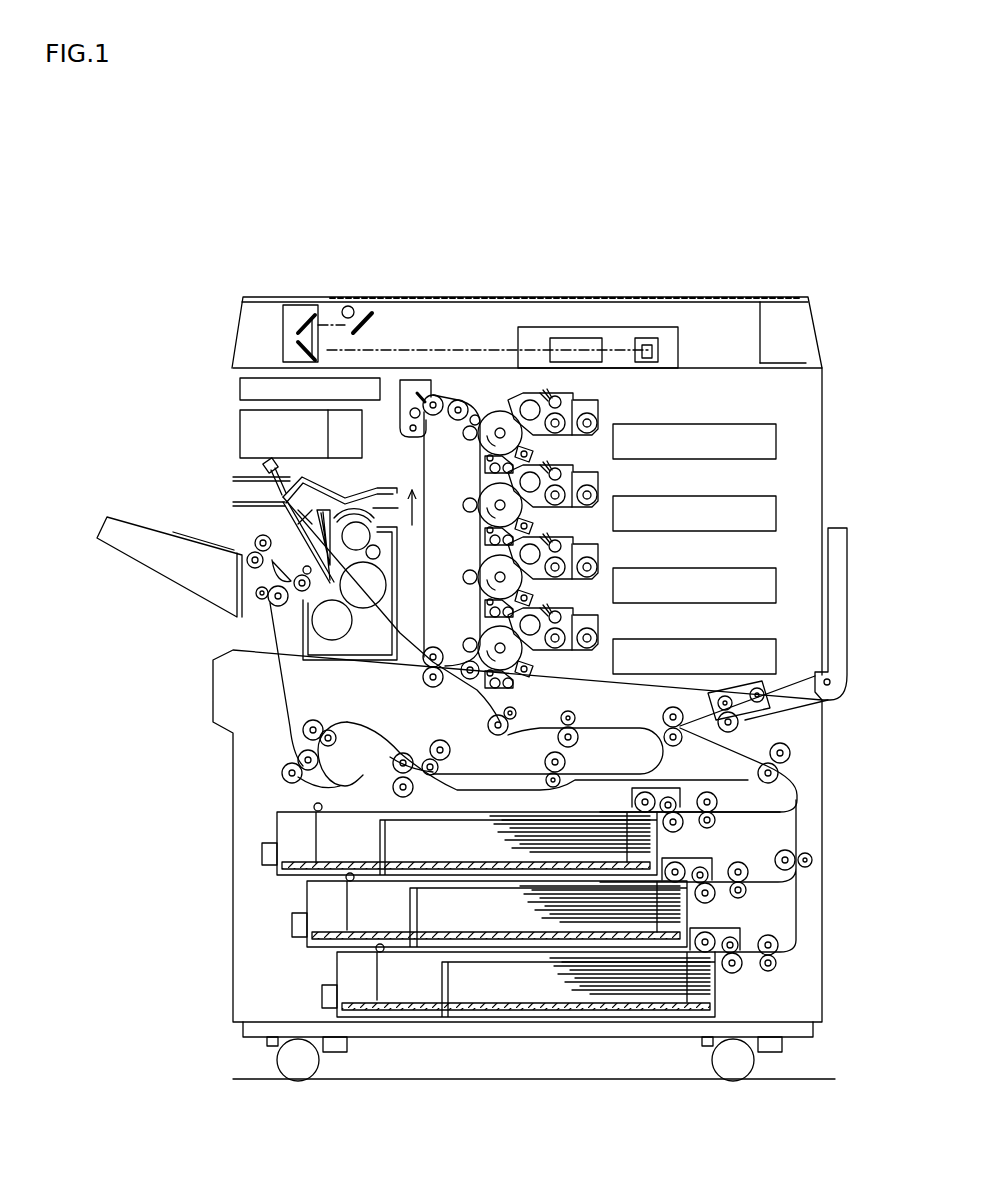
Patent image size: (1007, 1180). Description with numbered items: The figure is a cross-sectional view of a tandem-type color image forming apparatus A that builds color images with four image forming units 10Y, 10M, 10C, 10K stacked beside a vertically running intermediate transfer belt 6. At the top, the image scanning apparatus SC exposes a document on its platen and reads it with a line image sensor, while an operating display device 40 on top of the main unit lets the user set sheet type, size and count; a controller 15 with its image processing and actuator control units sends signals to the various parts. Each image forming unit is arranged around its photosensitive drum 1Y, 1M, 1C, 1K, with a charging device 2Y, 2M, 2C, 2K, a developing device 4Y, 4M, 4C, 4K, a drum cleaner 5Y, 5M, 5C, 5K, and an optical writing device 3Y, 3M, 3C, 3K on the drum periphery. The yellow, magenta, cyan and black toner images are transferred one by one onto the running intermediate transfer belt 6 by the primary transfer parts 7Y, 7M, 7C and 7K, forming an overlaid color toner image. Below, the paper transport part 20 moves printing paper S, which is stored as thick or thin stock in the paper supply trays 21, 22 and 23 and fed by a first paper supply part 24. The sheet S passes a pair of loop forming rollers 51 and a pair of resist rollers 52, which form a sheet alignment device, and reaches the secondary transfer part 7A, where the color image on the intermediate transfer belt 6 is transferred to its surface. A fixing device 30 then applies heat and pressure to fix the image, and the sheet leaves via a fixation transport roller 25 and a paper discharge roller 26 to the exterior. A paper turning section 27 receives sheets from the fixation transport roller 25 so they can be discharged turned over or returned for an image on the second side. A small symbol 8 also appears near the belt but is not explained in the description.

The image forming apparatus A is at (828, 470).
The image scanning apparatus SC is at (745, 328).
The operating display device 40 is at (792, 362).
The controller 15 is at (245, 432).
The sensor 8 is at (385, 509).
The paper discharge roller 26 is at (256, 538).
The fixation transport roller 25 is at (303, 573).
The paper turning section 27 is at (268, 665).
The fixing device 30 is at (353, 668).
The intermediate transfer belt 6 is at (424, 455).
The secondary transfer part 7A is at (433, 688).
The primary transfer part 7K is at (468, 682).
The image forming unit 10Y is at (571, 421).
The image forming unit 10M is at (574, 502).
The image forming unit 10C is at (572, 574).
The image forming unit 10K is at (573, 657).
The photosensitive drum 1Y is at (496, 414).
The photosensitive drum 1M is at (476, 498).
The photosensitive drum 1C is at (476, 570).
The photosensitive drum 1K is at (476, 641).
The primary transfer part 7Y is at (452, 433).
The primary transfer part 7M is at (452, 505).
The primary transfer part 7C is at (452, 577).
The developing device 4Y is at (575, 402).
The developing device 4M is at (586, 483).
The developing device 4C is at (584, 555).
The developing device 4K is at (584, 626).
The charging device 2Y is at (562, 456).
The charging device 2M is at (565, 527).
The charging device 2C is at (563, 599).
The charging device 2K is at (548, 672).
The drum cleaner 5Y is at (475, 458).
The drum cleaner 5M is at (475, 530).
The drum cleaner 5C is at (475, 602).
The drum cleaner 5K is at (518, 691).
The optical writing device 3Y is at (762, 441).
The optical writing device 3M is at (762, 514).
The optical writing device 3C is at (762, 586).
The optical writing device 3K is at (762, 658).
The loop forming rollers 51 is at (575, 715).
The resist rollers 52 is at (506, 733).
The printing paper S is at (578, 818).
The first paper supply part 24 is at (665, 790).
The paper transport part 20 is at (752, 745).
The paper supply tray 21 is at (425, 805).
The paper supply tray 22 is at (307, 890).
The paper supply tray 23 is at (337, 968).